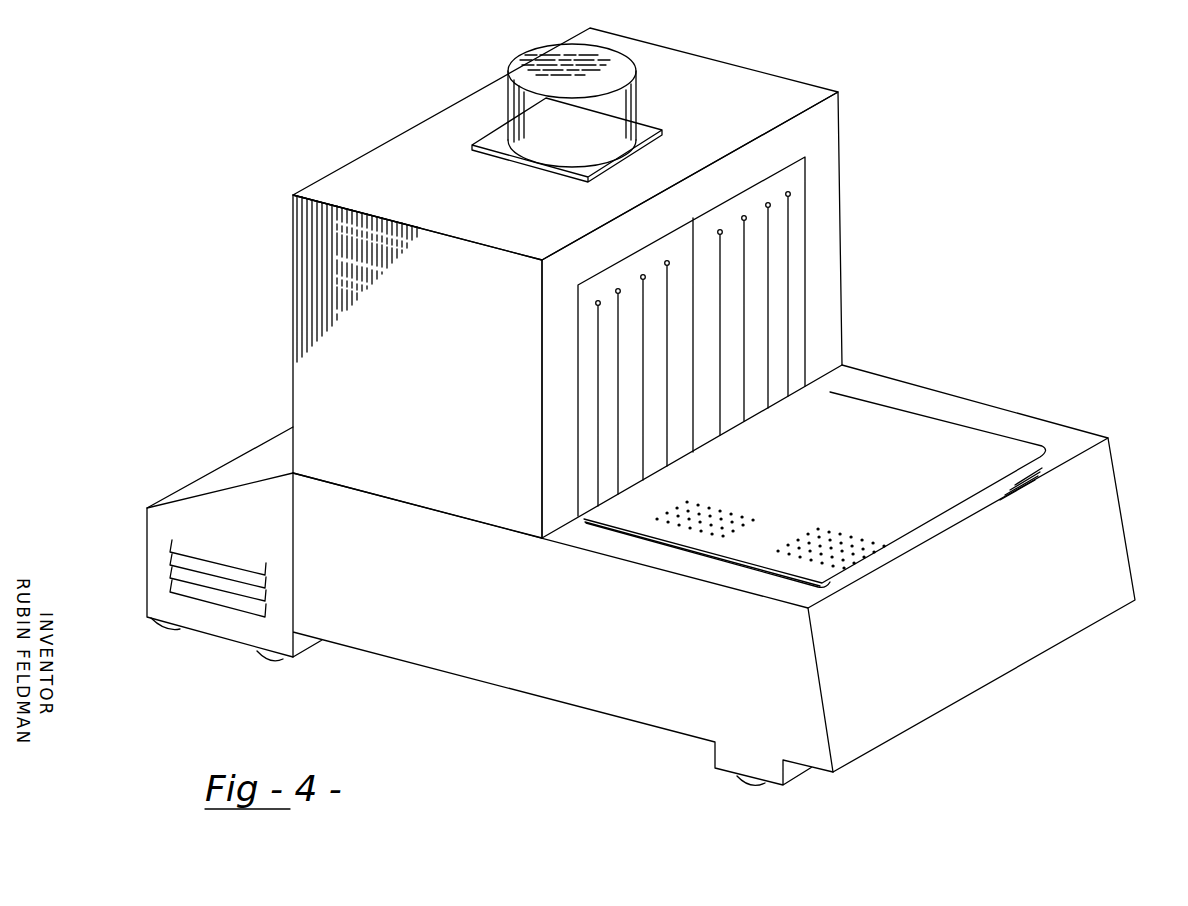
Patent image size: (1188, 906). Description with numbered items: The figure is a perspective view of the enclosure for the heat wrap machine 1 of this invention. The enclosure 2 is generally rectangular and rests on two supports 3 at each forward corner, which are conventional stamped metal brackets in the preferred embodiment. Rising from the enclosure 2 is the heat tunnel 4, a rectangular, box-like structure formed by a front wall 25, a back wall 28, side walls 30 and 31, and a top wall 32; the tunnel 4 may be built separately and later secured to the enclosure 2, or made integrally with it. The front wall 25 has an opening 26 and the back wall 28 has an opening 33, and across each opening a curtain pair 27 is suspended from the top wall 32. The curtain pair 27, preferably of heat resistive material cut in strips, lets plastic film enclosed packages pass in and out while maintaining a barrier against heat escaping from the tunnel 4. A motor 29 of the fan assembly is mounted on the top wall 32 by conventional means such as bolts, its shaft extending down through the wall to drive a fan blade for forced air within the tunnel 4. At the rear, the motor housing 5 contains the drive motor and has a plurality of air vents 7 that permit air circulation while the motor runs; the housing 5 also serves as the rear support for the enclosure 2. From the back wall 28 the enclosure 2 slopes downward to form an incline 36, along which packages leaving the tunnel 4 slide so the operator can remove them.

The heat wrap machine 1 is at (948, 384).
The enclosure 2 is at (729, 596).
The supports 3 is at (760, 790).
The heat tunnel 4 is at (565, 283).
The motor housing 5 is at (190, 544).
The air vents 7 is at (165, 598).
The front wall 25 is at (560, 473).
The opening 26 is at (570, 392).
The curtain pair 27 is at (732, 437).
The back wall 28 is at (290, 298).
The motor 29 is at (640, 95).
The side wall 30 is at (310, 390).
The side wall 31 is at (845, 239).
The top wall 32 is at (705, 68).
The opening 33 is at (277, 238).
The incline 36 is at (232, 470).